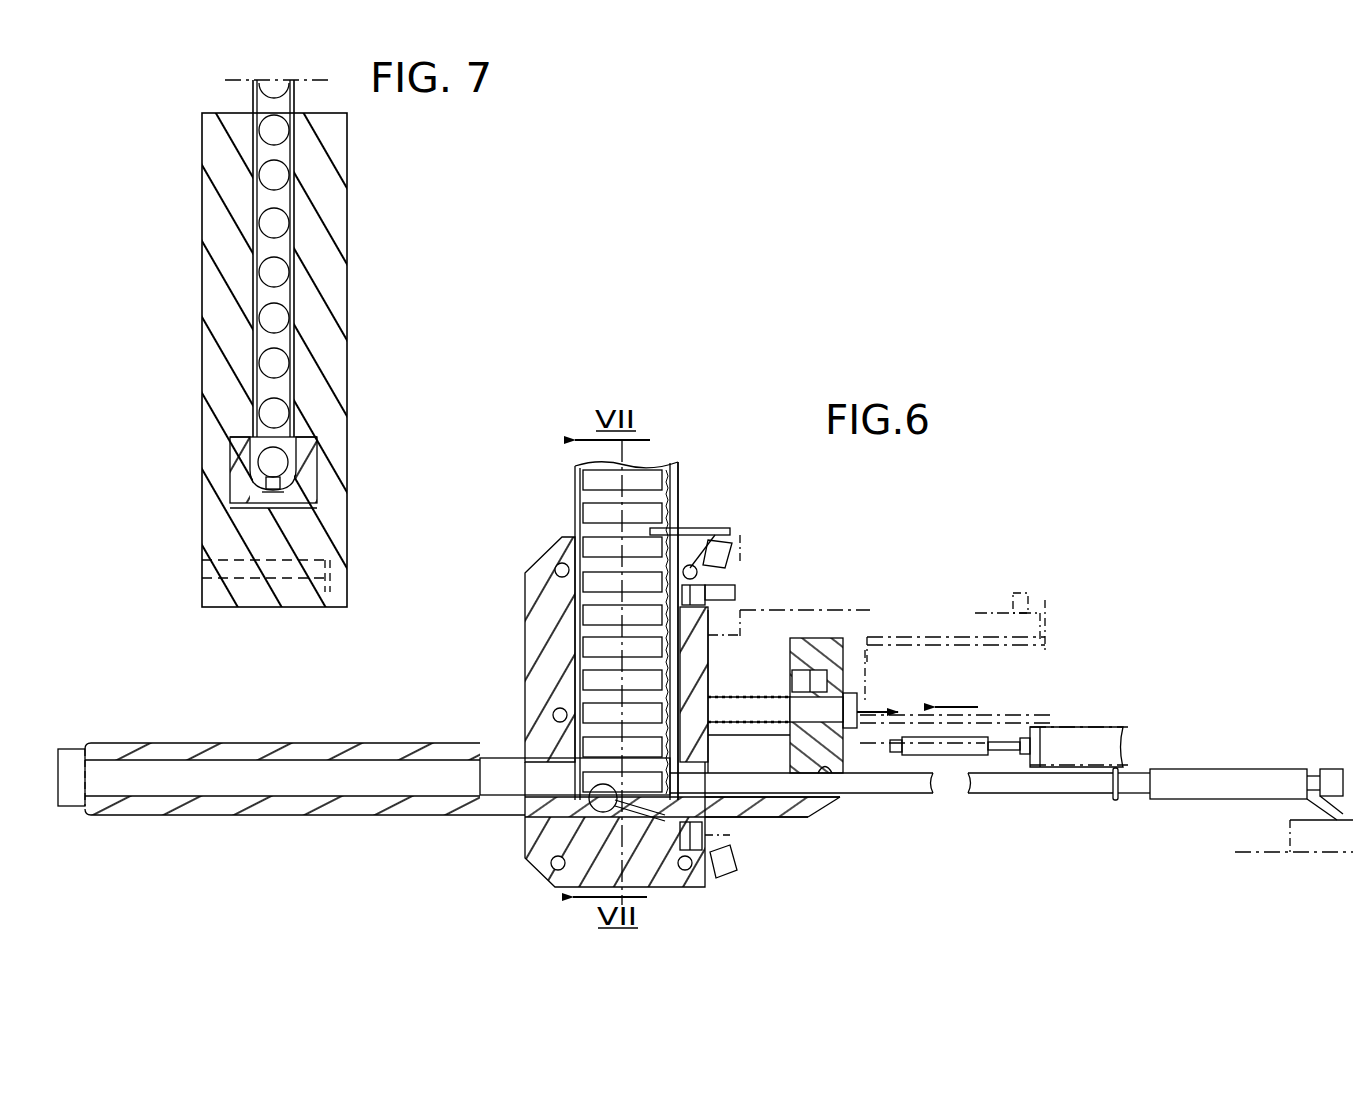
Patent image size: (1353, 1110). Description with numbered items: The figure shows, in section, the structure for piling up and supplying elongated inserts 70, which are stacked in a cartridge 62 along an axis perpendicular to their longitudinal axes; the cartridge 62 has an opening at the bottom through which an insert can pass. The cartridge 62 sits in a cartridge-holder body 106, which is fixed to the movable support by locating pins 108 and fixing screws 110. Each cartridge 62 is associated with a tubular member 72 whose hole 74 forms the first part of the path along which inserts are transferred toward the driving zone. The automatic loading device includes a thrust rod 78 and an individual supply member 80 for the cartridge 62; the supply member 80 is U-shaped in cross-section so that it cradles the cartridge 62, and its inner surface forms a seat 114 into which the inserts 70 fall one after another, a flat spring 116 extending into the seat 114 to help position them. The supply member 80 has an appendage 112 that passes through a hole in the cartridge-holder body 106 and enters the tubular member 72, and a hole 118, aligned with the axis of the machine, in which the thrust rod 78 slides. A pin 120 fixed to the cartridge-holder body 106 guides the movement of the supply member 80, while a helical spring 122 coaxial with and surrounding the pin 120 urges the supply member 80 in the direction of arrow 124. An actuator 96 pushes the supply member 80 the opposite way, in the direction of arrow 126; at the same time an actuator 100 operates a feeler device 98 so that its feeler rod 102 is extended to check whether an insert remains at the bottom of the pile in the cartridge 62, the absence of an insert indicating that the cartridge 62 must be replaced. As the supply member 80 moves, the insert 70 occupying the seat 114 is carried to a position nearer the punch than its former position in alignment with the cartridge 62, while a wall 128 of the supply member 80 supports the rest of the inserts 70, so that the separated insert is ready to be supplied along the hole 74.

In FIG. 7, the cartridge 62 is at (294, 157).
In FIG. 6, the cartridge 62 is at (676, 486).
In FIG. 7, the inserts 70 is at (274, 272).
In FIG. 6, the inserts 70 is at (610, 580).
In FIG. 6, the tubular member 72 is at (395, 810).
In FIG. 6, the hole 74 is at (318, 797).
In FIG. 6, the thrust rod 78 is at (928, 793).
In FIG. 7, the individual supply member 80 is at (310, 480).
In FIG. 6, the individual supply member 80 is at (790, 810).
In FIG. 6, the actuator 96 is at (945, 652).
In FIG. 6, the feeler device 98 is at (965, 745).
In FIG. 6, the actuator 100 is at (1075, 727).
In FIG. 6, the feeler rod 102 is at (885, 730).
In FIG. 7, the cartridge-holder body 106 is at (347, 226).
In FIG. 6, the cartridge-holder body 106 is at (548, 568).
In FIG. 6, the locating pins 108 is at (728, 595).
In FIG. 6, the fixing screws 110 is at (712, 530).
In FIG. 6, the appendage 112 is at (527, 845).
In FIG. 7, the seat 114 is at (268, 492).
In FIG. 6, the seat 114 is at (605, 812).
In FIG. 6, the flat spring 116 is at (640, 818).
In FIG. 6, the hole 118 is at (832, 773).
In FIG. 6, the pin 120 is at (760, 712).
In FIG. 6, the helical spring 122 is at (745, 680).
In FIG. 6, the arrow 124 is at (862, 680).
In FIG. 6, the arrow 126 is at (978, 707).
In FIG. 6, the wall 128 is at (735, 762).